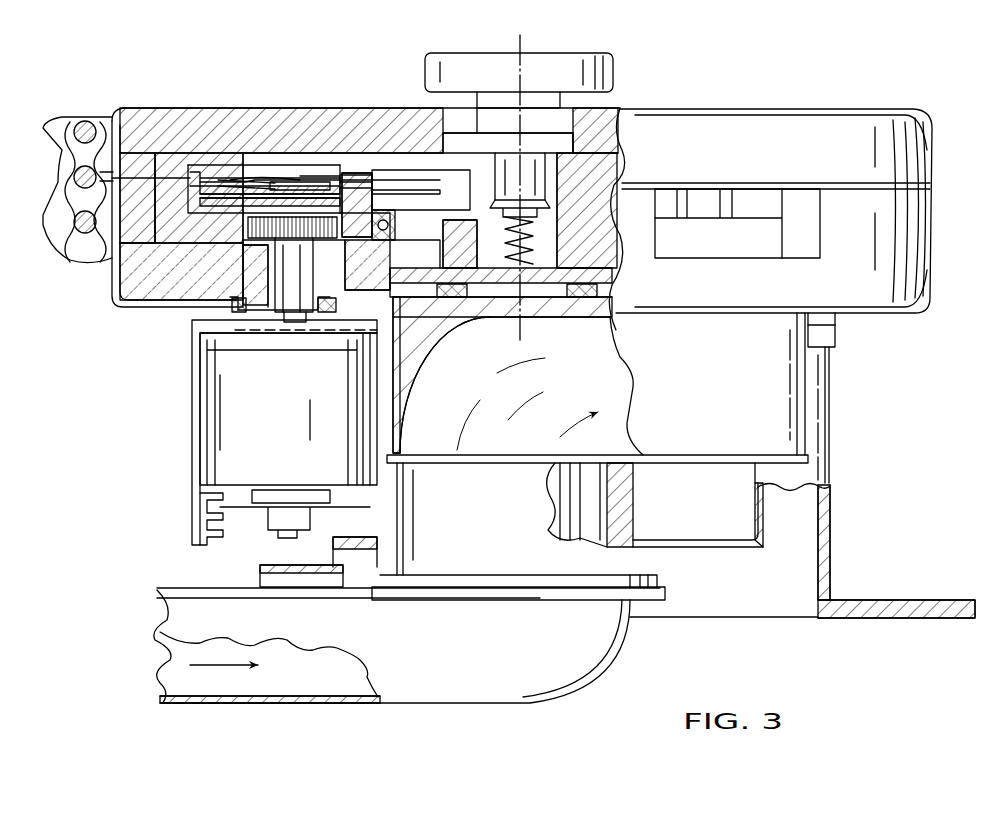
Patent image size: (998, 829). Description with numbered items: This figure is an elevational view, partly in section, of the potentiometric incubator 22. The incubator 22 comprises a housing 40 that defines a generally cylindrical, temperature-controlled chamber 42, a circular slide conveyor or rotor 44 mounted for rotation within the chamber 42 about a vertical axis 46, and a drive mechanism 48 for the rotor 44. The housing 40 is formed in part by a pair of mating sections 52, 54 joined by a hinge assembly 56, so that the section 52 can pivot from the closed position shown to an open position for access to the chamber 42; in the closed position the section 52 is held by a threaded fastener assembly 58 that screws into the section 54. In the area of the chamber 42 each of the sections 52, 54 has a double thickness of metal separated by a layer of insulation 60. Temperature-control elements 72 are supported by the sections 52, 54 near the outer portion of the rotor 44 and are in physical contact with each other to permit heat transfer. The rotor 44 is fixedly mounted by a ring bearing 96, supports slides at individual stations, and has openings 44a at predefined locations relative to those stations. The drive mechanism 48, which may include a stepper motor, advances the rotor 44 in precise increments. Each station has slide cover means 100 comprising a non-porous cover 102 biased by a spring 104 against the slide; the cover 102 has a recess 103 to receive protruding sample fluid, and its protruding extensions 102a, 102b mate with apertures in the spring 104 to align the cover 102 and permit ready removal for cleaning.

The incubator 22 is at (780, 103).
The housing 40 is at (853, 105).
The temperature-controlled chamber 42 is at (205, 168).
The rotor 44 is at (335, 213).
The openings 44a is at (292, 330).
The vertical axis 46 is at (520, 44).
The drive mechanism 48 is at (182, 452).
The housing section 52 is at (935, 150).
The housing section 54 is at (935, 258).
The hinge assembly 56 is at (57, 112).
The threaded fastener assembly 58 is at (548, 58).
The layer of insulation 60 is at (370, 125).
The temperature-control elements 72 is at (170, 150).
The ring bearing 96 is at (386, 222).
The slide cover means 100 is at (195, 172).
The cover 102 is at (170, 285).
The protruding extension 102a is at (250, 182).
The protruding extension 102b is at (275, 190).
The recess 103 is at (248, 178).
The spring 104 is at (318, 180).